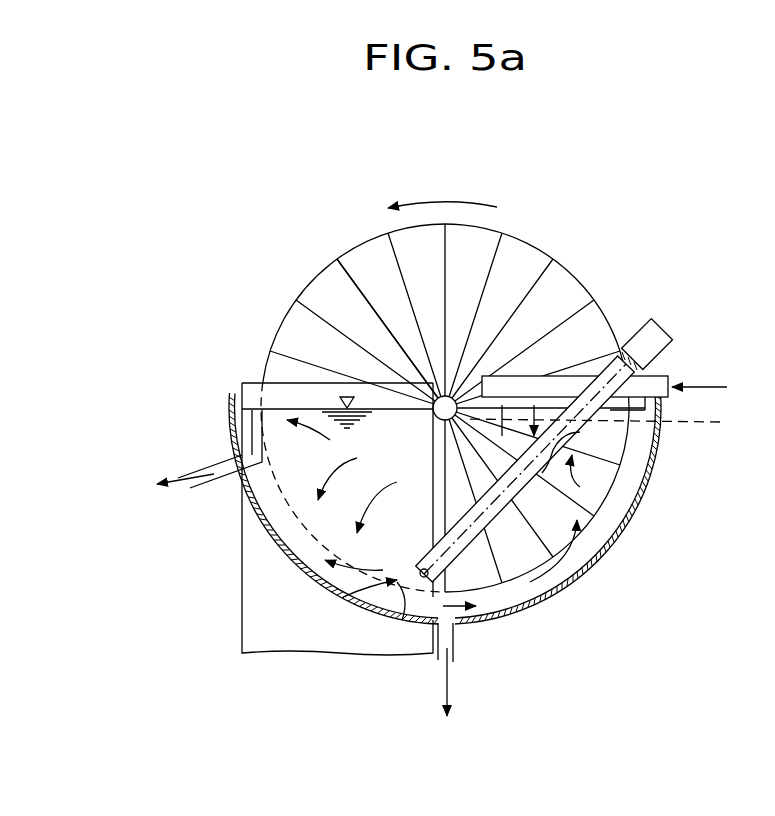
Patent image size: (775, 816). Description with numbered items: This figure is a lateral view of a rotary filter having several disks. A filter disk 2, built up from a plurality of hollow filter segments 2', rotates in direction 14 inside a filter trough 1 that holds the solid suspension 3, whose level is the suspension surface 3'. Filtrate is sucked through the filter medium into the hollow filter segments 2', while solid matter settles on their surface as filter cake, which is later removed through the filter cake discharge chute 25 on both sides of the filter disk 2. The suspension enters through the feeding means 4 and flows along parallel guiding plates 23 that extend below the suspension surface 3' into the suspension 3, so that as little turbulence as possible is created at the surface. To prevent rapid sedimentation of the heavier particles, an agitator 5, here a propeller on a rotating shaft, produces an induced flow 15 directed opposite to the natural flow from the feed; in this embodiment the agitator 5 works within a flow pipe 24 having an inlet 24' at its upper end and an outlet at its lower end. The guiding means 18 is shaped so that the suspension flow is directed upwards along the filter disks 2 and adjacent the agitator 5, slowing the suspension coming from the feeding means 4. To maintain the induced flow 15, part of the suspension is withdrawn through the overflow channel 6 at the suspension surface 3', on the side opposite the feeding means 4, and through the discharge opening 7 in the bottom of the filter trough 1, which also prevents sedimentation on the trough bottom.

The filter trough 1 is at (567, 598).
The filter disk 2 is at (445, 382).
The filter segments 2' is at (358, 296).
The solid suspension 3 is at (444, 565).
The suspension surface 3' is at (313, 438).
The feeding means 4 is at (563, 385).
The agitator 5 is at (658, 335).
The overflow channel 6 is at (223, 470).
The discharge opening 7 is at (455, 662).
The direction of rotation 14 is at (447, 198).
The induced flow 15 is at (580, 433).
The guiding means 18 is at (382, 602).
The parallel guiding plates 23 is at (610, 421).
The flow pipe 24 is at (536, 649).
The inlet 24' is at (650, 459).
The filter cake discharge chute 25 is at (263, 592).